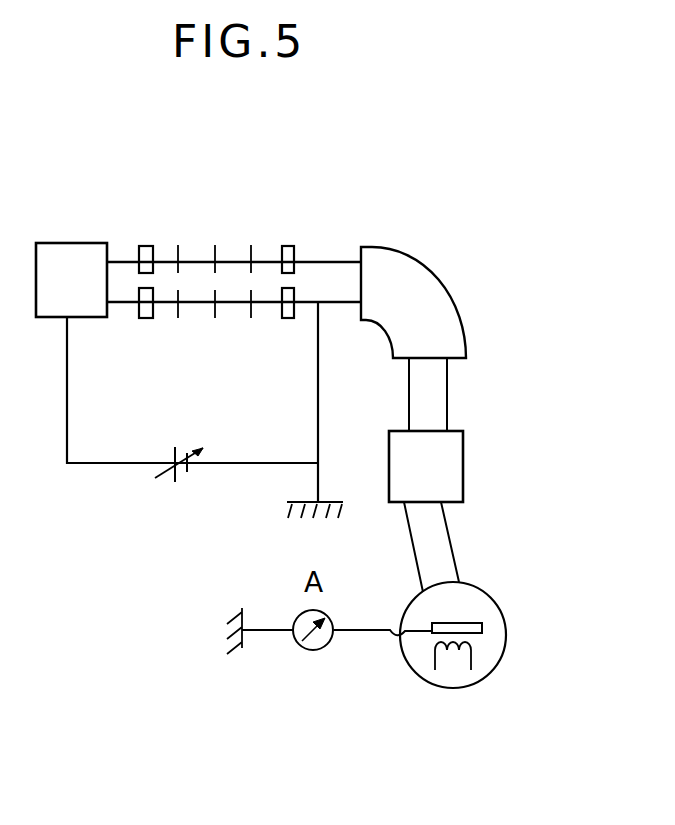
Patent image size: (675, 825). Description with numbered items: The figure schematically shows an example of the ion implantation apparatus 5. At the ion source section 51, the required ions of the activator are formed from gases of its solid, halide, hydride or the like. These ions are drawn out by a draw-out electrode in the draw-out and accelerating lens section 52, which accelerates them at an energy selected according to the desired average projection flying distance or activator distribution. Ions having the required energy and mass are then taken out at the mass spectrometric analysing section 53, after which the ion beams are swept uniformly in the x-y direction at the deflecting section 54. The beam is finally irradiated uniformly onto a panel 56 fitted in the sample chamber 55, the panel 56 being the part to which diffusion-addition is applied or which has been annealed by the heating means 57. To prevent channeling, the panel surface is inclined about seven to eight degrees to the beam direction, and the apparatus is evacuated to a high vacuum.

The ion implantation apparatus 5 is at (289, 218).
The ion source section 51 is at (68, 243).
The draw-out and accelerating lens section 52 is at (207, 230).
The mass spectrometric analysing section 53 is at (427, 275).
The deflecting section 54 is at (464, 467).
The sample chamber 55 is at (500, 608).
The panel 56 is at (440, 630).
The heating means 57 is at (472, 657).